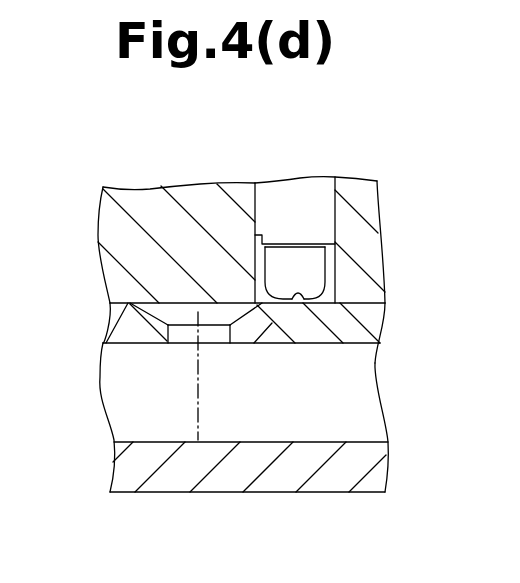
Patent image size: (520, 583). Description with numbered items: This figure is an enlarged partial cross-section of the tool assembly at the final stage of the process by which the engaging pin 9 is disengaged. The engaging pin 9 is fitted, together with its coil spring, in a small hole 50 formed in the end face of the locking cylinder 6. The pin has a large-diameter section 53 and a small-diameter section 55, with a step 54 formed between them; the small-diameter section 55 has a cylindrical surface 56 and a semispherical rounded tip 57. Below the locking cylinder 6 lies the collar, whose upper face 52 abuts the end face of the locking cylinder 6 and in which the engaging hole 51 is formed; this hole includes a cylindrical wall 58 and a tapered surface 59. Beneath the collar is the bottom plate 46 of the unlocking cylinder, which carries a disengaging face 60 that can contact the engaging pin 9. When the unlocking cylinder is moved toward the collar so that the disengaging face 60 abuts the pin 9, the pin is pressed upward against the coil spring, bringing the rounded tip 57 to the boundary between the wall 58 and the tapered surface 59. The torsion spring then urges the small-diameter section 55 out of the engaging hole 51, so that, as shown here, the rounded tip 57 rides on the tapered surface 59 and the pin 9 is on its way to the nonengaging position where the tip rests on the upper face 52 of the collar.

The locking cylinder 6 is at (118, 226).
The engaging pin 9 is at (318, 199).
The bottom plate 46 is at (289, 493).
The small hole 50 is at (350, 223).
The engaging hole 51 is at (192, 339).
The upper face 52 is at (312, 304).
The large-diameter section 53 is at (296, 190).
The step 54 is at (257, 231).
The small-diameter section 55 is at (371, 274).
The cylindrical surface 56 is at (312, 263).
The rounded tip 57 is at (310, 287).
The cylindrical wall 58 is at (177, 344).
The tapered surface 59 is at (160, 318).
The disengaging face 60 is at (198, 439).